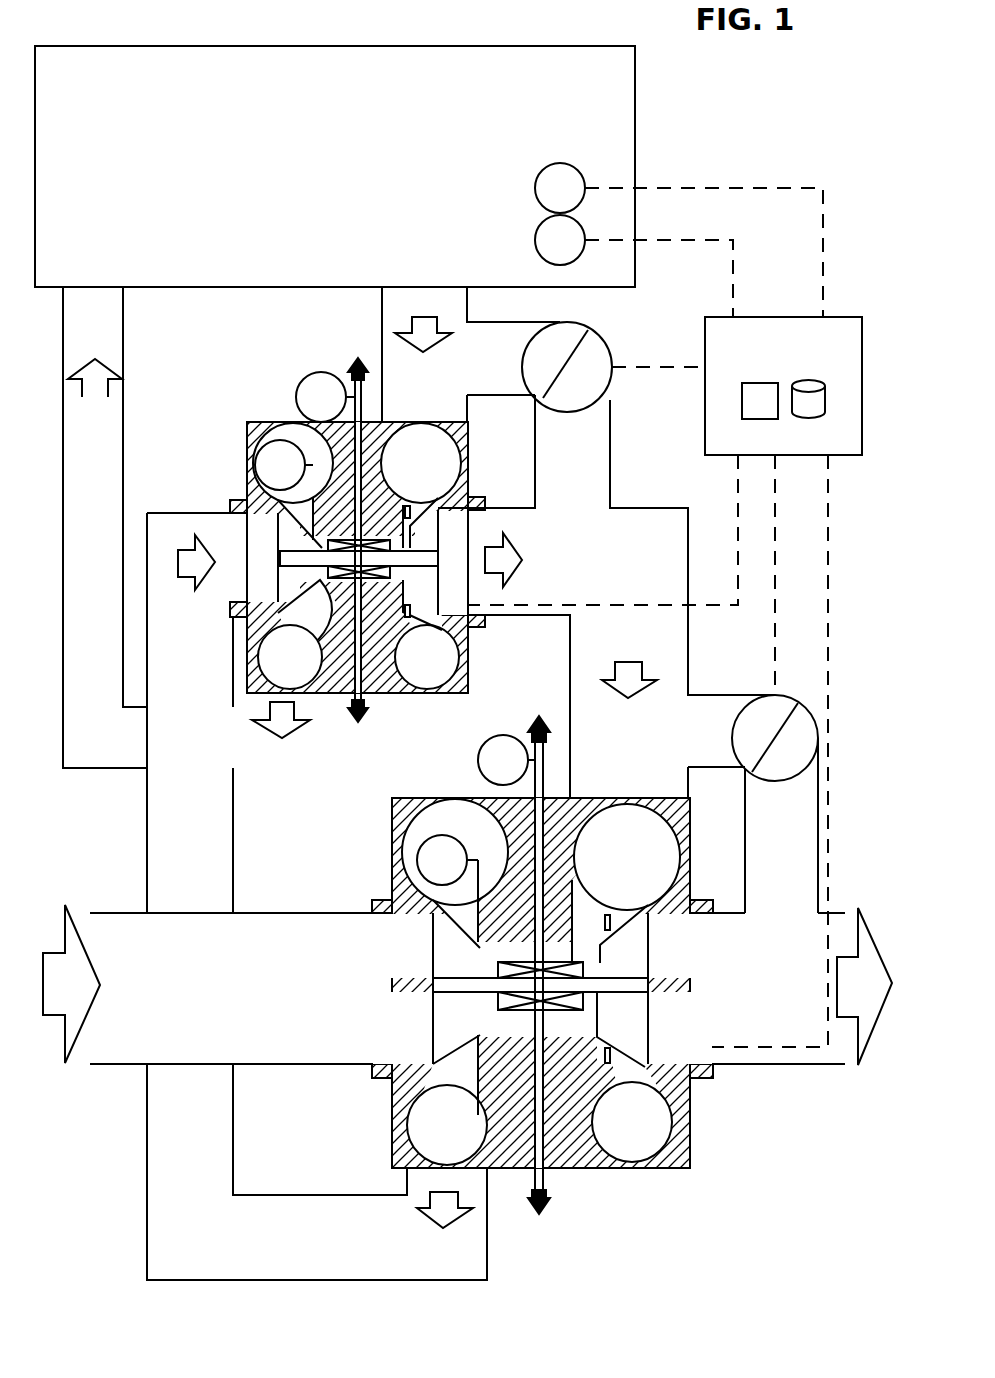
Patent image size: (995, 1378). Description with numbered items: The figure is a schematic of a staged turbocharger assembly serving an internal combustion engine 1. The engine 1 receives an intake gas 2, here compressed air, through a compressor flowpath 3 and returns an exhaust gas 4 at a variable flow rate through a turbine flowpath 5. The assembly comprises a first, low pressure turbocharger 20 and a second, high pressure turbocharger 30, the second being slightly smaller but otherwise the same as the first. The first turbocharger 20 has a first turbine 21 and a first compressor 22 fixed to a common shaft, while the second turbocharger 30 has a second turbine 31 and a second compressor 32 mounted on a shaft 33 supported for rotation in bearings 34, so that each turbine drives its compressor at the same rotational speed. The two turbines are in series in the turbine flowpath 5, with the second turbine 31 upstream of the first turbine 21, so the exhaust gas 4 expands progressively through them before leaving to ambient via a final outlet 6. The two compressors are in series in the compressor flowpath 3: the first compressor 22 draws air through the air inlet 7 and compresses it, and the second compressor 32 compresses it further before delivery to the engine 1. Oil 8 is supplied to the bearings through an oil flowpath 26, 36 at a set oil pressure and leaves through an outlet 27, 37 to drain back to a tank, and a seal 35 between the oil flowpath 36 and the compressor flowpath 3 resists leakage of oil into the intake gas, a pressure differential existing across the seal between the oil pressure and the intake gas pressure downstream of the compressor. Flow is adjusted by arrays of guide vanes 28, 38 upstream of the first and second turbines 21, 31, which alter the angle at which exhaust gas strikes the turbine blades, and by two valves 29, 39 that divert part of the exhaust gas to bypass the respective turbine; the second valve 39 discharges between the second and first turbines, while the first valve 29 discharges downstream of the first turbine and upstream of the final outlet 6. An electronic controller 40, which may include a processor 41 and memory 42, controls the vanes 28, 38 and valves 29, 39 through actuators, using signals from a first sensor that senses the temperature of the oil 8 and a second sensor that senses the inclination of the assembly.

The internal combustion engine 1 is at (143, 48).
The intake gas 2 is at (129, 711).
The compressor flowpath 3 is at (86, 562).
The exhaust gas 4 is at (643, 678).
The turbine flowpath 5 is at (424, 395).
The final outlet 6 is at (868, 1079).
The air inlet 7 is at (71, 1082).
The oil 8 is at (352, 372).
The first turbocharger 20 is at (544, 972).
The first turbine 21 is at (648, 949).
The first compressor 22 is at (433, 948).
The oil flowpath 26 is at (548, 780).
The outlet 27 is at (548, 1176).
The guide vanes 28 is at (608, 1063).
The first valve 29 is at (820, 732).
The second turbocharger 30 is at (366, 534).
The second turbine 31 is at (438, 520).
The second compressor 32 is at (278, 591).
The shaft 33 is at (278, 548).
The bearings 34 is at (438, 597).
The seal 35 is at (312, 652).
The oil flowpath 36 is at (366, 418).
The outlet 37 is at (368, 705).
The guide vanes 38 is at (408, 614).
The second valve 39 is at (592, 347).
The electronic controller 40 is at (650, 666).
The processor 41 is at (758, 383).
The memory 42 is at (806, 380).